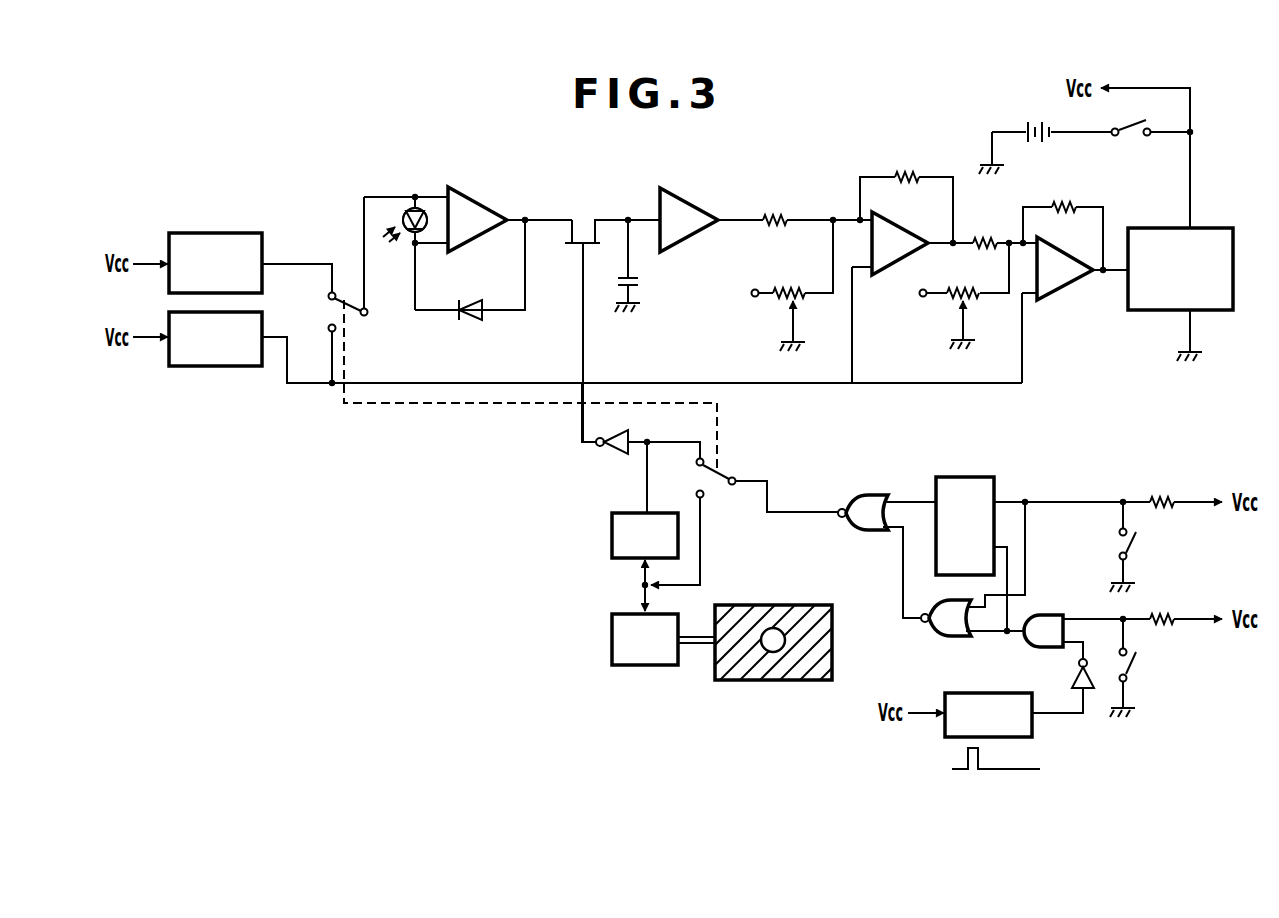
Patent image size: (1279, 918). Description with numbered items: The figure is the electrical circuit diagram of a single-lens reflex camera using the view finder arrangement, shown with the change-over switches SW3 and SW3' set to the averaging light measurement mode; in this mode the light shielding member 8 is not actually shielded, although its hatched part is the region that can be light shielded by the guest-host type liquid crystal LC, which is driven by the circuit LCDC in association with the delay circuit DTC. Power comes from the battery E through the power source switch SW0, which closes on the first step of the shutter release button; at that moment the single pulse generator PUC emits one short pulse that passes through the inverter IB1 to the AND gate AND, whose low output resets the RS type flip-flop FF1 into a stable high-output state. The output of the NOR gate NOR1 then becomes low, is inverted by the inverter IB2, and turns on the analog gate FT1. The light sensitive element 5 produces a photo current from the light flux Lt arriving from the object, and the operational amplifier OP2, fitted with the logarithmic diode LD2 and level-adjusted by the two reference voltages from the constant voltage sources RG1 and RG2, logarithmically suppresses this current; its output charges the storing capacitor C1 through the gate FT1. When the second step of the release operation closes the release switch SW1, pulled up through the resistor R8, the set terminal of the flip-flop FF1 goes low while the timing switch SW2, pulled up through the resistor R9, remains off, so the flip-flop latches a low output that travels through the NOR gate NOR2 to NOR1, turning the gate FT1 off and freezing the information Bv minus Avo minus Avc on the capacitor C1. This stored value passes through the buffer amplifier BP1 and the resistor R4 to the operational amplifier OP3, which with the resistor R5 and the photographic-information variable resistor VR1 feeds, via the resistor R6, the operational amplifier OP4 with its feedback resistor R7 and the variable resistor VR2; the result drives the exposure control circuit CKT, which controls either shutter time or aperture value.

The light sensitive element 5 is at (427, 209).
The light shielding member 8 is at (752, 681).
The constant voltage source RG1 is at (250, 263).
The constant voltage source RG2 is at (595, 347).
The change-over switch SW3 is at (517, 332).
The light flux Lt is at (406, 252).
The operational amplifier OP2 is at (493, 248).
The diode LD2 is at (472, 329).
The analog gate FT1 is at (612, 316).
The capacitor C1 is at (620, 264).
The buffer amplifier BP1 is at (711, 220).
The resistor R4 is at (817, 206).
The variable resistor VR1 is at (793, 285).
The resistor R5 is at (906, 193).
The operational amplifier OP3 is at (912, 297).
The resistor R6 is at (1005, 229).
The variable resistor VR2 is at (965, 296).
The resistor R7 is at (1064, 224).
The operational amplifier OP4 is at (1075, 310).
The exposure control circuit CKT is at (1167, 224).
The power source battery E is at (1045, 135).
The power source switch SW0 is at (1153, 144).
The inverter IB2 is at (641, 448).
The change-over switch SW3' is at (744, 515).
The delay circuit DTC is at (645, 562).
The liquid crystal driving circuit LCDC is at (663, 639).
The liquid crystal LC is at (826, 636).
The NOR gate NOR1 is at (887, 541).
The RS type flip-flop FF1 is at (1043, 541).
The NOR gate NOR2 is at (972, 634).
The AND gate AND is at (1087, 621).
The resistor R8 is at (1186, 488).
The release switch SW1 is at (1142, 547).
The resistor R9 is at (1186, 604).
The timing switch SW2 is at (1142, 668).
The inverter IB1 is at (1063, 686).
The single pulse generator PUC is at (974, 731).